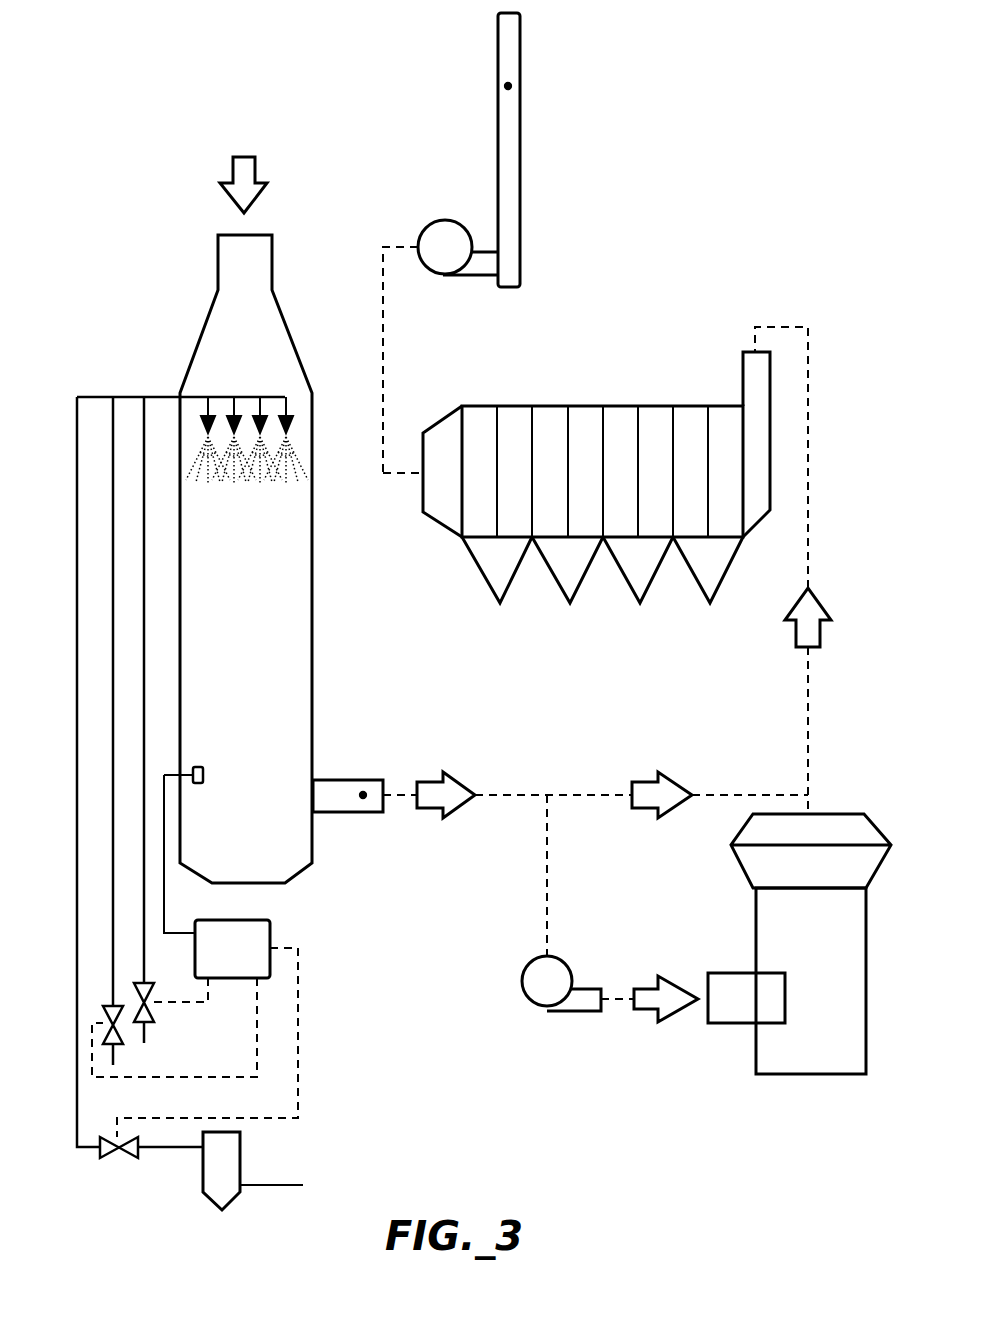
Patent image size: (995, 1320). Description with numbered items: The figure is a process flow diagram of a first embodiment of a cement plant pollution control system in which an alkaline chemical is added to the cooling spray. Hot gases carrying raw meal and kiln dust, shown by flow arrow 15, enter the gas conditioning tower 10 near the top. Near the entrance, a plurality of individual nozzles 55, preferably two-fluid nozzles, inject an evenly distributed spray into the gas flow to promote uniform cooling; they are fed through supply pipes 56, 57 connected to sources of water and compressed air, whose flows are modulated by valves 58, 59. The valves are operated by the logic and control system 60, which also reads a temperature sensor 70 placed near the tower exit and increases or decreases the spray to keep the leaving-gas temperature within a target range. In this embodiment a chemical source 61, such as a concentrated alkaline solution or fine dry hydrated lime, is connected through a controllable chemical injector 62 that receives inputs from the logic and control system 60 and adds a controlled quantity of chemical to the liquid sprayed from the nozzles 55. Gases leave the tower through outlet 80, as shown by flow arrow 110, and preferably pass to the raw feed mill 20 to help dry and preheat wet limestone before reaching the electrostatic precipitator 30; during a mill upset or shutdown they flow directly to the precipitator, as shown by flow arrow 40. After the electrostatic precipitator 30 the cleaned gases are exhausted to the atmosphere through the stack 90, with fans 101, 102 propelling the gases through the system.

The gas conditioning tower 10 is at (246, 559).
The flow arrow 15 is at (258, 178).
The raw feed mill 20 is at (811, 944).
The electrostatic precipitator 30 is at (520, 406).
The flow arrow 40 is at (648, 775).
The individual nozzles 55 is at (293, 427).
The supply pipe 56 is at (113, 805).
The supply pipe 57 is at (144, 593).
The valve 58 is at (107, 1015).
The valve 59 is at (155, 1012).
The logic and control system 60 is at (232, 949).
The chemical source 61 is at (253, 1171).
The controllable chemical injector 62 is at (130, 1153).
The temperature sensor 70 is at (205, 772).
The outlet 80 is at (350, 813).
The stack 90 is at (522, 168).
The fan 101 is at (447, 218).
The fan 102 is at (549, 1011).
The flow arrow 110 is at (452, 778).